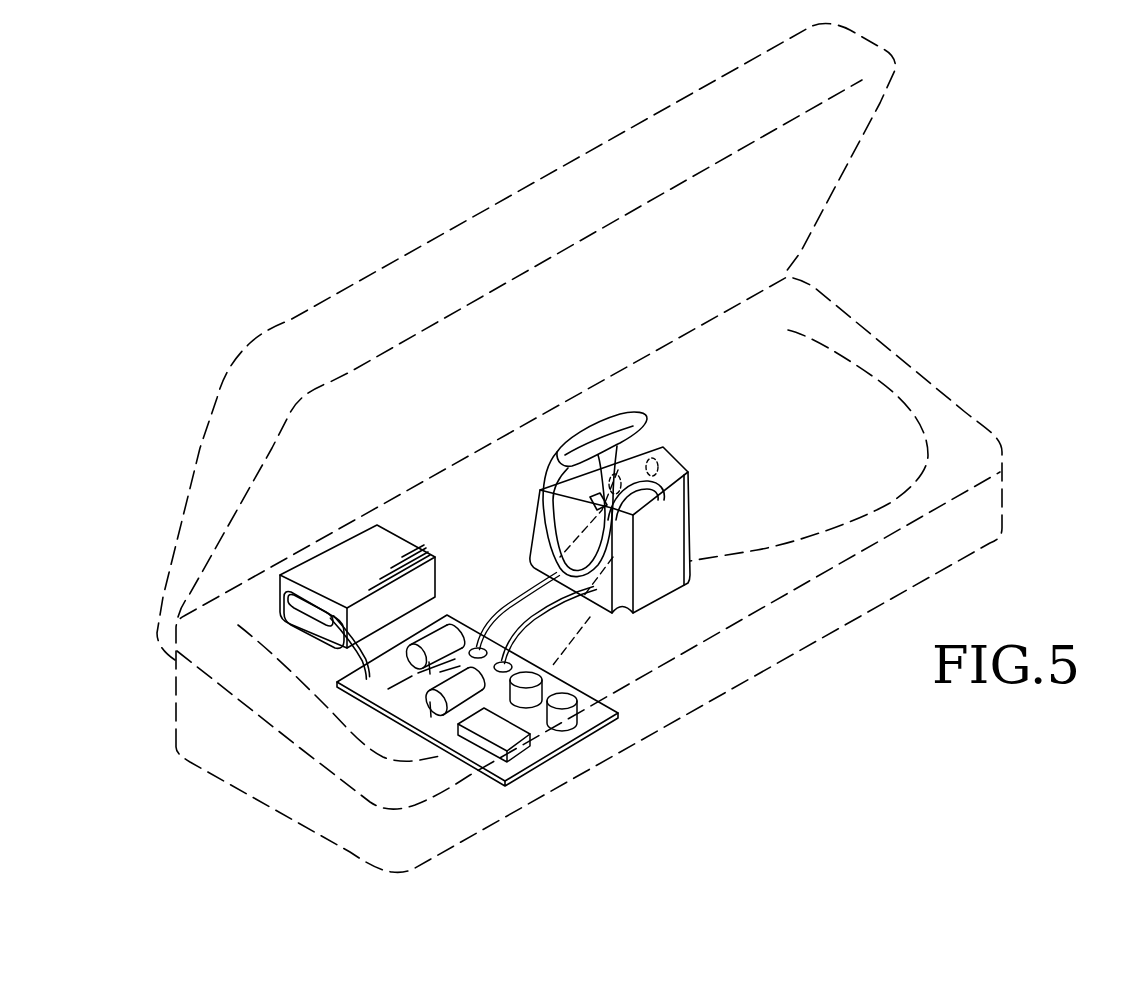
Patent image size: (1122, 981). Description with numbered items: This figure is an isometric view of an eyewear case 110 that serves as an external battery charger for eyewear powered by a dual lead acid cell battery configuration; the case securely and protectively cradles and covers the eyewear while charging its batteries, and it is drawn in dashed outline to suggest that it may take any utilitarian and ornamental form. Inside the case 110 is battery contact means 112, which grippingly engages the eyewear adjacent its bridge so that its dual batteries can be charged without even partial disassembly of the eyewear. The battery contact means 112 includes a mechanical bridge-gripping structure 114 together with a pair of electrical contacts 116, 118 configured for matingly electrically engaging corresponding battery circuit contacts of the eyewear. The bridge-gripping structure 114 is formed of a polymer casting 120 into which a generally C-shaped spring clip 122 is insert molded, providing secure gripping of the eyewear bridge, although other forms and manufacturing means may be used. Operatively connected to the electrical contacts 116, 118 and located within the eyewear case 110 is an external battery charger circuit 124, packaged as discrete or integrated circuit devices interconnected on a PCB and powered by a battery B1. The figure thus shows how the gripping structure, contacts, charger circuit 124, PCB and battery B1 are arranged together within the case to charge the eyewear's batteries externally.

The eyewear case 110 is at (900, 225).
The battery contact means 112 is at (703, 542).
The bridge-gripping structure 114 is at (662, 437).
The electrical contact 116 is at (619, 466).
The electrical contact 118 is at (667, 450).
The polymer casting 120 is at (690, 512).
The spring clip 122 is at (543, 530).
The external battery charger circuit 124 is at (585, 754).
The battery B1 is at (343, 557).
The printed circuit board PCB is at (537, 767).